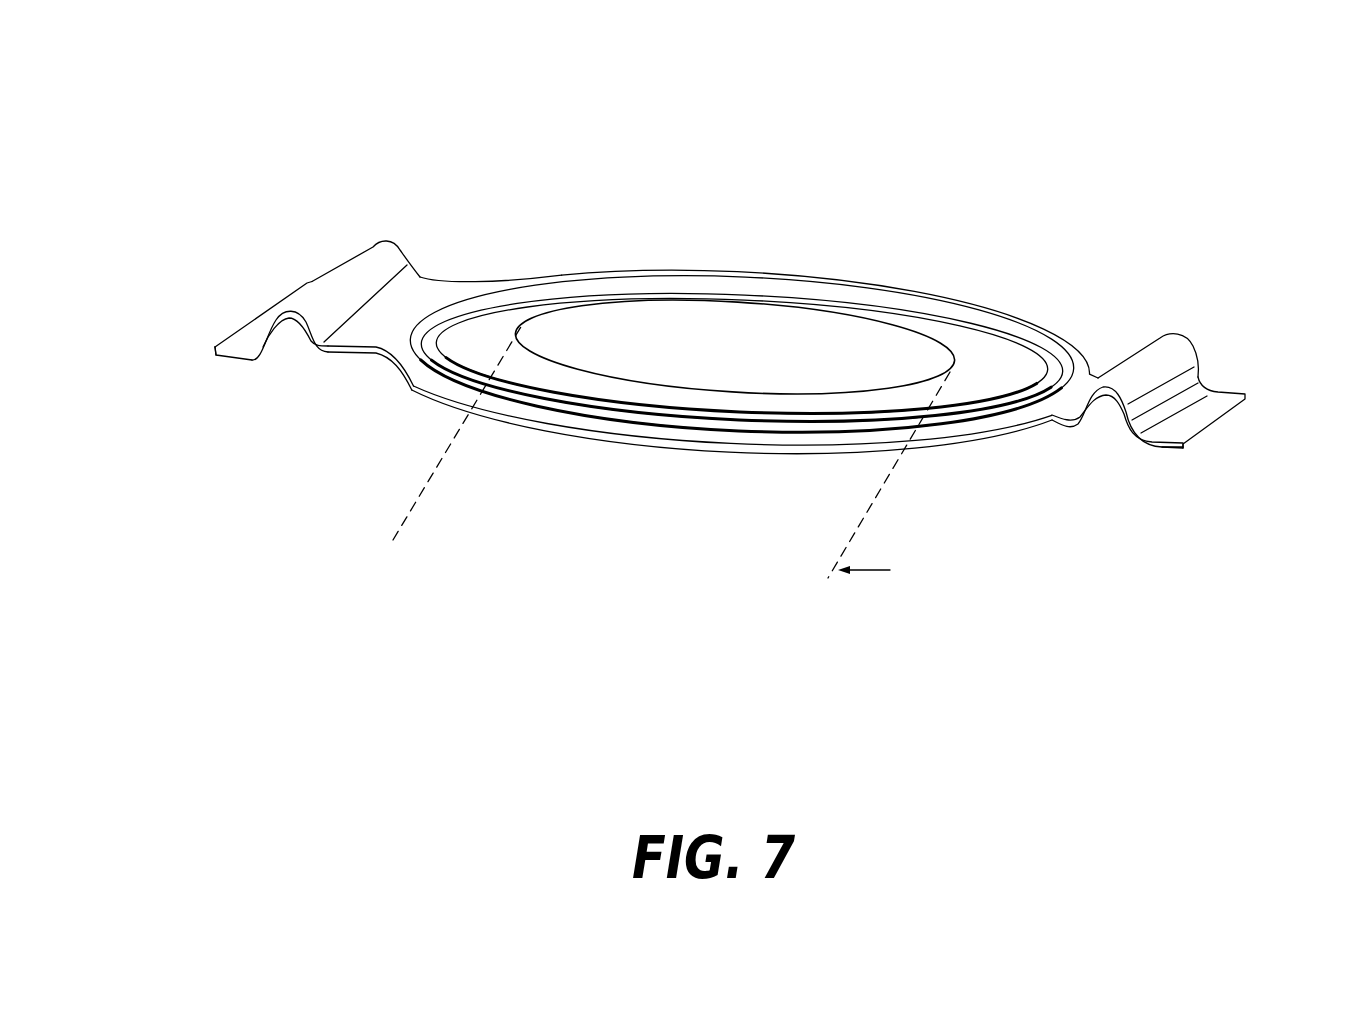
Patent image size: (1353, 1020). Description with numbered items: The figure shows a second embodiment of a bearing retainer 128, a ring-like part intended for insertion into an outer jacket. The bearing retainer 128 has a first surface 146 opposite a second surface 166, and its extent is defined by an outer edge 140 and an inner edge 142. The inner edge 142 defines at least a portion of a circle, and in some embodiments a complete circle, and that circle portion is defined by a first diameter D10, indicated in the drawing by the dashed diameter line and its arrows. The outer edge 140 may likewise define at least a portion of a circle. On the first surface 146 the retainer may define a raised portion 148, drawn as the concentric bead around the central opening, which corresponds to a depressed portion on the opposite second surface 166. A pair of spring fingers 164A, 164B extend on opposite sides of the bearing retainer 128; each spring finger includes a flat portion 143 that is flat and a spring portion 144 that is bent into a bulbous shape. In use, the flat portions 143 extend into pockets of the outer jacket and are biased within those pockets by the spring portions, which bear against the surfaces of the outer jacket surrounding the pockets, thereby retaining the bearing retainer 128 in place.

The bearing retainer 128 is at (1230, 159).
The outer edge 140 is at (812, 272).
The inner edge 142 is at (787, 303).
The flat portion 143 is at (242, 340).
The spring portion 144 is at (378, 262).
The first surface 146 is at (627, 397).
The raised portion 148 is at (998, 348).
The spring finger 164A is at (206, 353).
The spring finger 164B is at (1196, 442).
The second surface 166 is at (708, 303).
The first diameter D10 is at (383, 543).